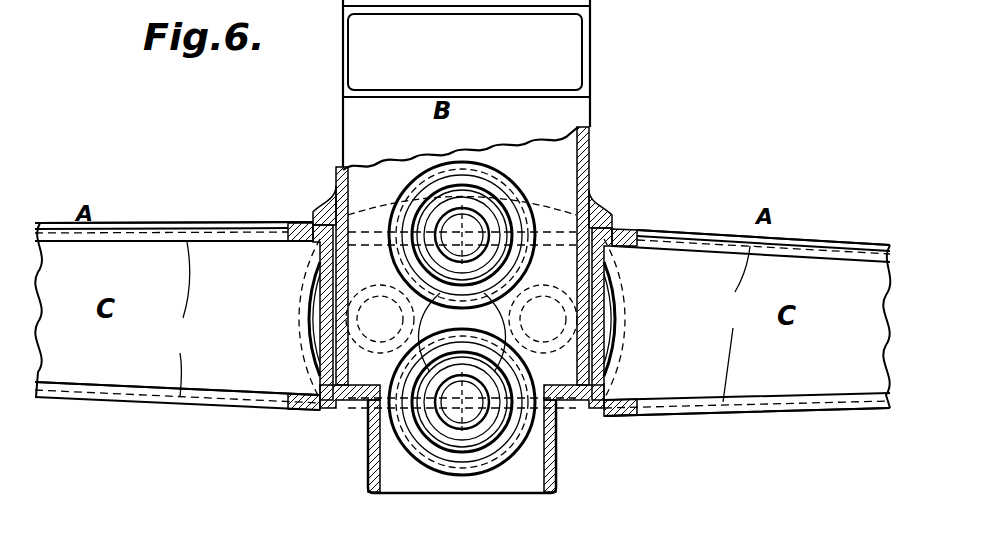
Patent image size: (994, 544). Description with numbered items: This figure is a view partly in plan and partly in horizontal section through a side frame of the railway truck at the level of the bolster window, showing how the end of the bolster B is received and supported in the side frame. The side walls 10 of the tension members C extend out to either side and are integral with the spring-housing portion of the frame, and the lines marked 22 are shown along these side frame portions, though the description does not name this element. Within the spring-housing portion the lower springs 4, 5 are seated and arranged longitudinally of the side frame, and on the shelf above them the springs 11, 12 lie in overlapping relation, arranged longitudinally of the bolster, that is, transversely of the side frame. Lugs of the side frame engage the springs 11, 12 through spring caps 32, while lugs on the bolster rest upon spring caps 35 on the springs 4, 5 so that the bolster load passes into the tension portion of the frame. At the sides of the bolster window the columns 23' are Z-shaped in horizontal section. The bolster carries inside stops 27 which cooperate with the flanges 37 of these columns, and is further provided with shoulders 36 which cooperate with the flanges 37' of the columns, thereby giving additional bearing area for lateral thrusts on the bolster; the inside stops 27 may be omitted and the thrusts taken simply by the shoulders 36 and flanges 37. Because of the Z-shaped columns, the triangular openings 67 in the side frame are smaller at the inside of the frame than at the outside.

The spring 4 is at (307, 294).
The spring 5 is at (610, 304).
The side walls of the tension members 10 is at (268, 408).
The spring 11 is at (430, 453).
The spring 12 is at (496, 185).
The plate edge 22 is at (145, 258).
The columns 23' is at (458, 319).
The inside stops 27 is at (318, 205).
The spring caps 32 is at (476, 231).
The spring caps 35 is at (317, 309).
The shoulders 36 is at (334, 363).
The flanges 37 is at (475, 312).
The flanges 37' is at (460, 422).
The triangular openings 67 is at (456, 322).